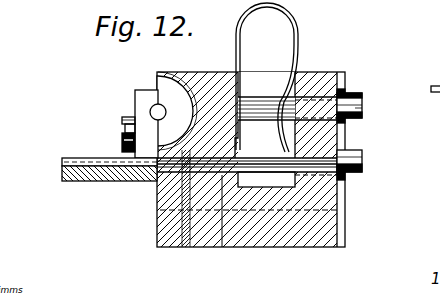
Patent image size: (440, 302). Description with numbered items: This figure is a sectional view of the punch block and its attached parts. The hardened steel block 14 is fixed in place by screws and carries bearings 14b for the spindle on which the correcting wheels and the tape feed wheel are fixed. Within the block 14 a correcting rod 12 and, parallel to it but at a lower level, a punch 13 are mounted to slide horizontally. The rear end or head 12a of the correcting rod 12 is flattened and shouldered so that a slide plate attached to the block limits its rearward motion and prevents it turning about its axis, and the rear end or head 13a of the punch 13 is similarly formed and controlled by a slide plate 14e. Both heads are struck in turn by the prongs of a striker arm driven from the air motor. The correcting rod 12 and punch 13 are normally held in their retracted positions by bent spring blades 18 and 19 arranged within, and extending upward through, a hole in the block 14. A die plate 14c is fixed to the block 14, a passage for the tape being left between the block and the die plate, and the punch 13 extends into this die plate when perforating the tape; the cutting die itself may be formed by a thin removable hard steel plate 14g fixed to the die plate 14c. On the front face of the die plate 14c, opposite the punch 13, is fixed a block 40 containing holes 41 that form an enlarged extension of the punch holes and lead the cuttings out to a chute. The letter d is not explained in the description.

The correcting rod 12 is at (287, 97).
The rear end or head of correcting rod 12a is at (349, 99).
The punch 13 is at (248, 157).
The rear end or head of punch 13a is at (362, 155).
The hardened steel block 14 is at (259, 257).
The bearings 14b is at (146, 97).
The die plate 14c is at (168, 213).
The slide plate 14e is at (345, 176).
The thin removable hard steel plate 14g is at (185, 234).
The bent spring blade 18 is at (253, 38).
The bent spring blade 19 is at (281, 157).
The block 40 is at (72, 181).
The holes 41 is at (62, 160).
The groove d is at (362, 110).